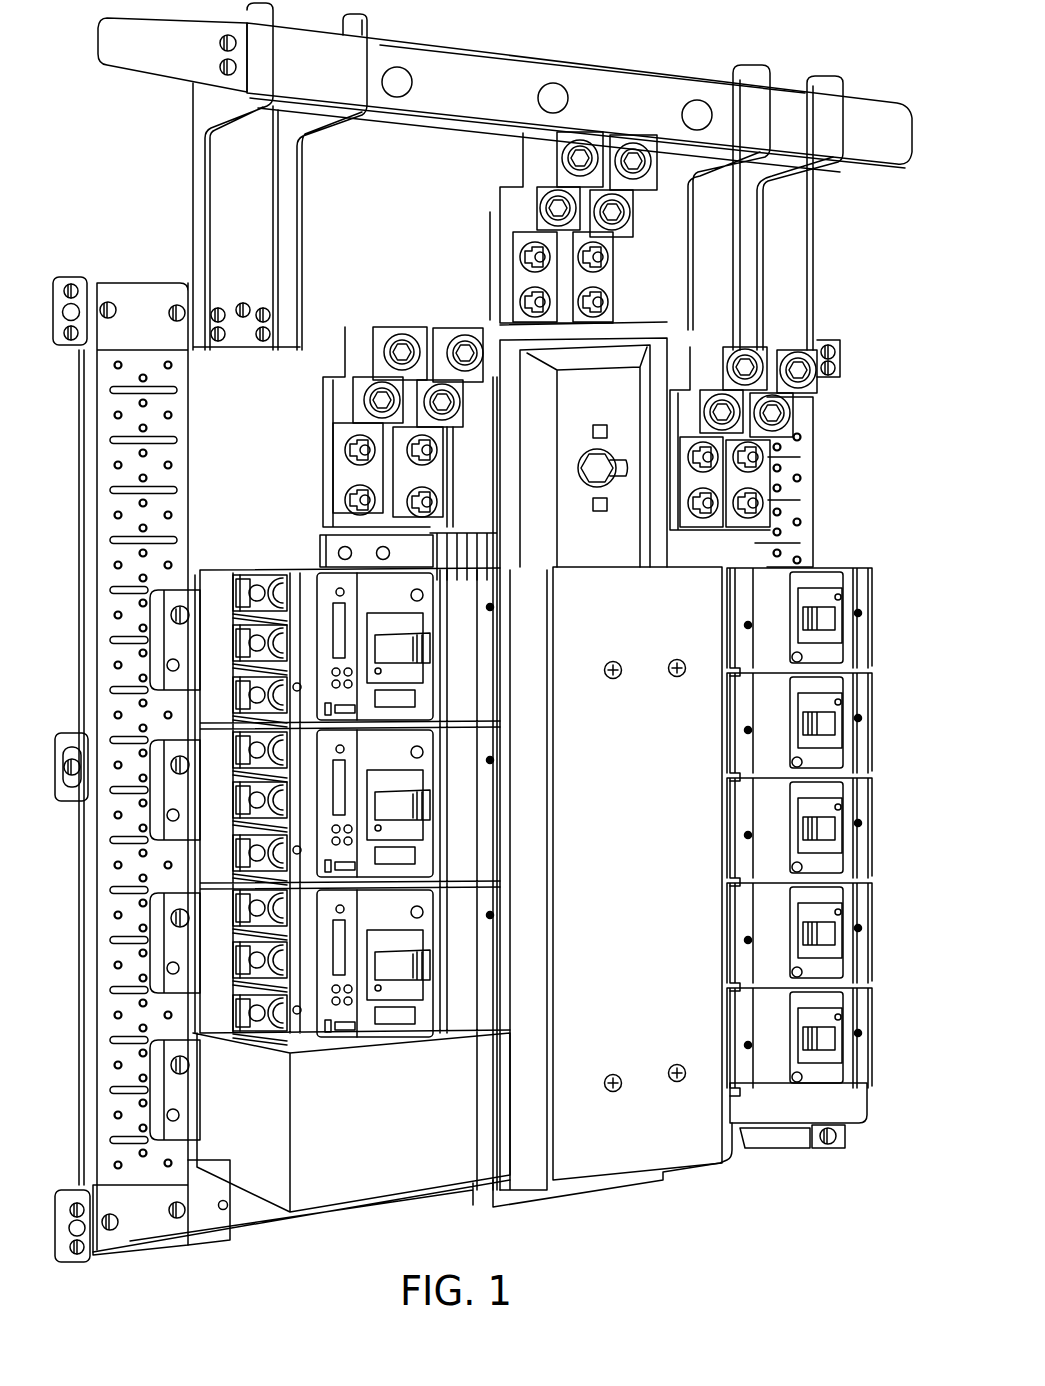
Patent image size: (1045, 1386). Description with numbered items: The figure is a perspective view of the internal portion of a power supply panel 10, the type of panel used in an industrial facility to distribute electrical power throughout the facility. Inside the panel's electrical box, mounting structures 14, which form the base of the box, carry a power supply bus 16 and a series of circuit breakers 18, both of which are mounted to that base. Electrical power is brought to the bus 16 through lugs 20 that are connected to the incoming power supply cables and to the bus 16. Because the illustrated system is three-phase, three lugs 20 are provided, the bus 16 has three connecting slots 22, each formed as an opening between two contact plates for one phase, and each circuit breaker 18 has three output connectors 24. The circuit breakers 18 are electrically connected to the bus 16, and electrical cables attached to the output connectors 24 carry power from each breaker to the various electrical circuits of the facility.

The power supply panel 10 is at (572, 42).
The mounting structures 14 is at (152, 285).
The power supply bus 16 is at (625, 375).
The circuit breakers 18 is at (325, 590).
The lugs 20 is at (385, 330).
The connecting slots 22 is at (485, 548).
The output connectors 24 is at (252, 590).